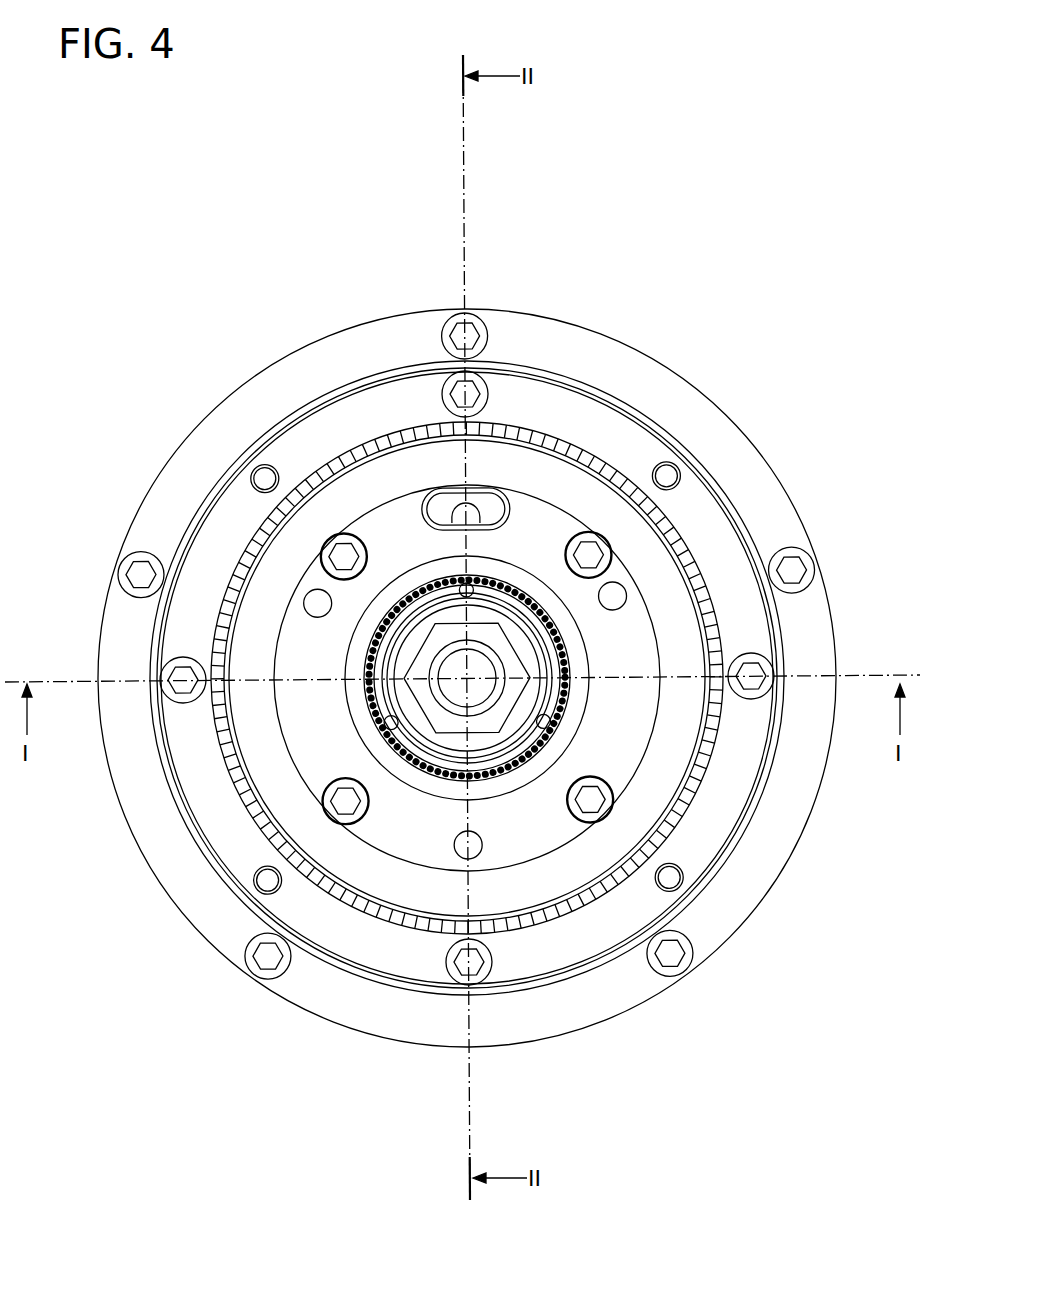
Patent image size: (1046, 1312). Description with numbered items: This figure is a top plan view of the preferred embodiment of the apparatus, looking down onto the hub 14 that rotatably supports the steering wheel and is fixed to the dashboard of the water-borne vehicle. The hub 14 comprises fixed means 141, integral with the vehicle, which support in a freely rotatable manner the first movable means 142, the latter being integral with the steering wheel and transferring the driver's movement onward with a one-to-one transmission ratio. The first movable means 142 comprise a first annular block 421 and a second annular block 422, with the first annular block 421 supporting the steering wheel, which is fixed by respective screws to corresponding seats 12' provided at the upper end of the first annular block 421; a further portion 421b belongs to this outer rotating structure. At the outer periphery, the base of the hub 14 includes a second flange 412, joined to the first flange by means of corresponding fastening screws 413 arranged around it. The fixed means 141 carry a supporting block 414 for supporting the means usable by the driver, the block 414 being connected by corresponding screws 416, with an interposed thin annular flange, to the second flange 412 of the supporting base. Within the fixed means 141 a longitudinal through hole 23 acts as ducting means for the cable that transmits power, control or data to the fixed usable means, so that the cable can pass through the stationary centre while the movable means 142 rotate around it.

The hub 14 is at (494, 270).
The seats 12' is at (399, 655).
The longitudinal through hole 23 is at (490, 507).
The fixed means 141 is at (574, 496).
The first movable means 142 is at (646, 452).
The supporting block 414 is at (393, 534).
The screws 416 is at (589, 555).
The outer flange portion 421b is at (180, 487).
The first annular block 421 is at (705, 520).
The fastening screws 413 is at (142, 572).
The second annular block 422 is at (358, 945).
The second flange 412 is at (598, 993).